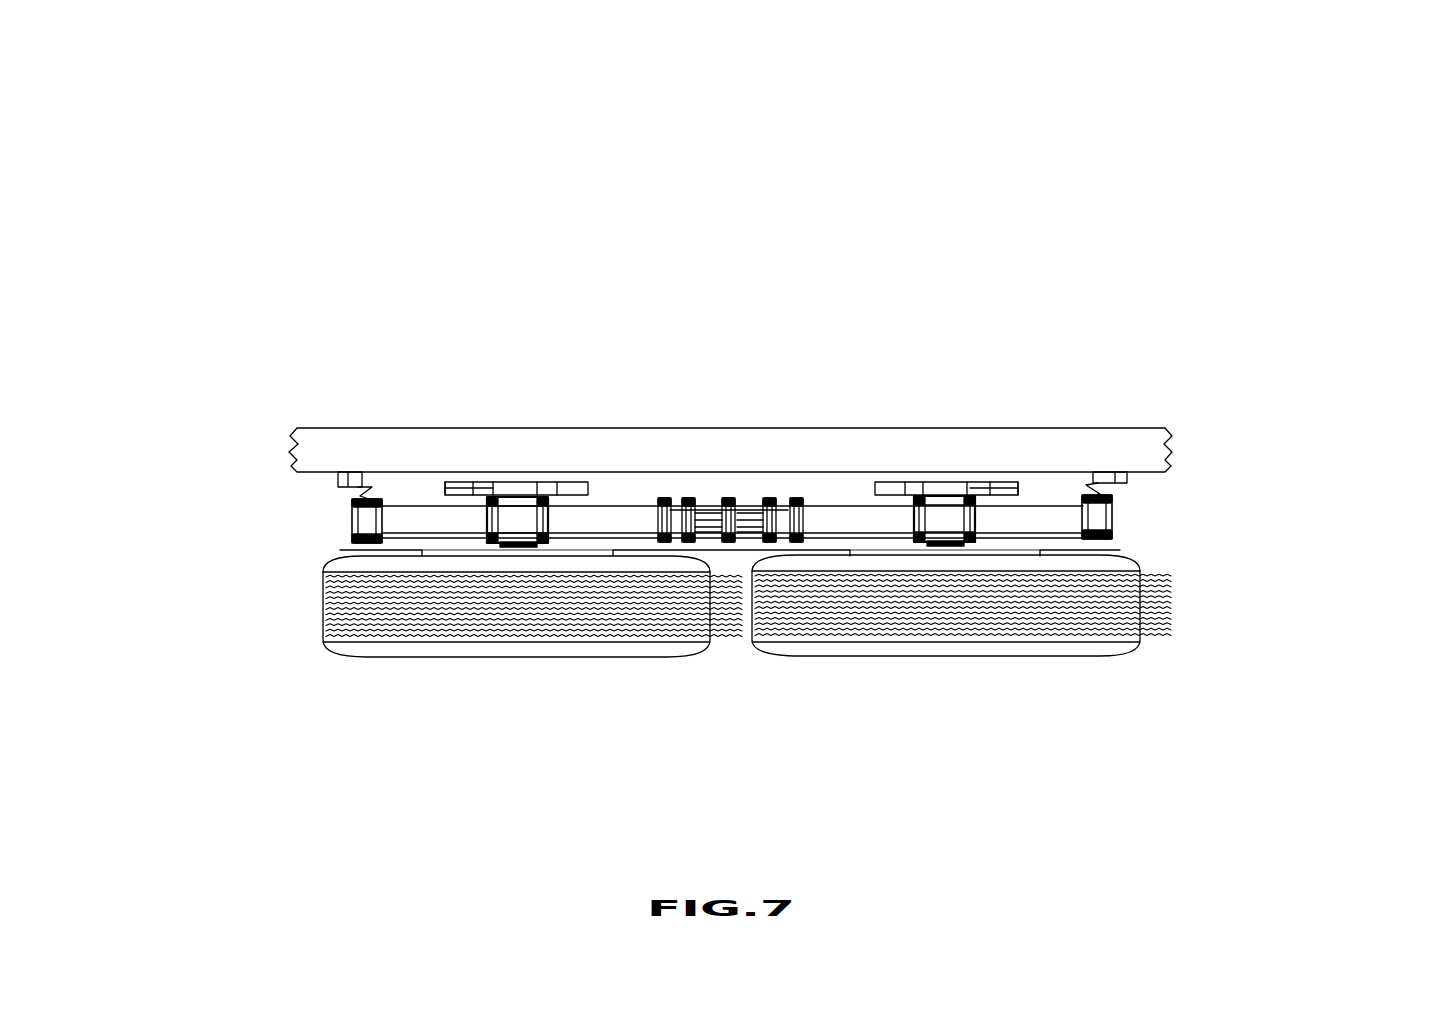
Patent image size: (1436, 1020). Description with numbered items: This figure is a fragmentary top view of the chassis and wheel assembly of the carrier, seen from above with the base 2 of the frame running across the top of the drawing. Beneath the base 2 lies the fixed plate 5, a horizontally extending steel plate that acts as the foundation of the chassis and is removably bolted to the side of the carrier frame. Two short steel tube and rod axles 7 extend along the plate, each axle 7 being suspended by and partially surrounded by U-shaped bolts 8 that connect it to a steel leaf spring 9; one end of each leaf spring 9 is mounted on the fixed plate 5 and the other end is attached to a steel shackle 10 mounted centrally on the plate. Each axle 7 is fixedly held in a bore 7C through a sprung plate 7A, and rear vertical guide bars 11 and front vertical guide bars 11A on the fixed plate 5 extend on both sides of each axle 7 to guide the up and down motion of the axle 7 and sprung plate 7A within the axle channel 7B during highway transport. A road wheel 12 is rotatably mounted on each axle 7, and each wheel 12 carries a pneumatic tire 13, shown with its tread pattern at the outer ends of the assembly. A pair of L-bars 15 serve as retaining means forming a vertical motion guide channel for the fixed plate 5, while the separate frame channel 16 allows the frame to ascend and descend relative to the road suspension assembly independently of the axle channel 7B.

The base of frame 2 is at (580, 428).
The fixed plate 5 is at (699, 498).
The axle 7 is at (425, 548).
The sprung plate 7A is at (530, 490).
The channel guiding sprung plate 7B is at (556, 490).
The bore within sprung plate 7C is at (515, 490).
The axle fastener means 8 is at (485, 490).
The energy storing device 9 is at (397, 522).
The restraint means 10 is at (678, 498).
The vertical guide, rear 11 is at (478, 485).
The vertical guide, front 11A is at (472, 488).
The wheel 12 is at (585, 652).
The tire 13 is at (325, 618).
The restraining means comprising fixed plate channel 15 is at (372, 482).
The channel guiding fixed plate 16 is at (347, 480).